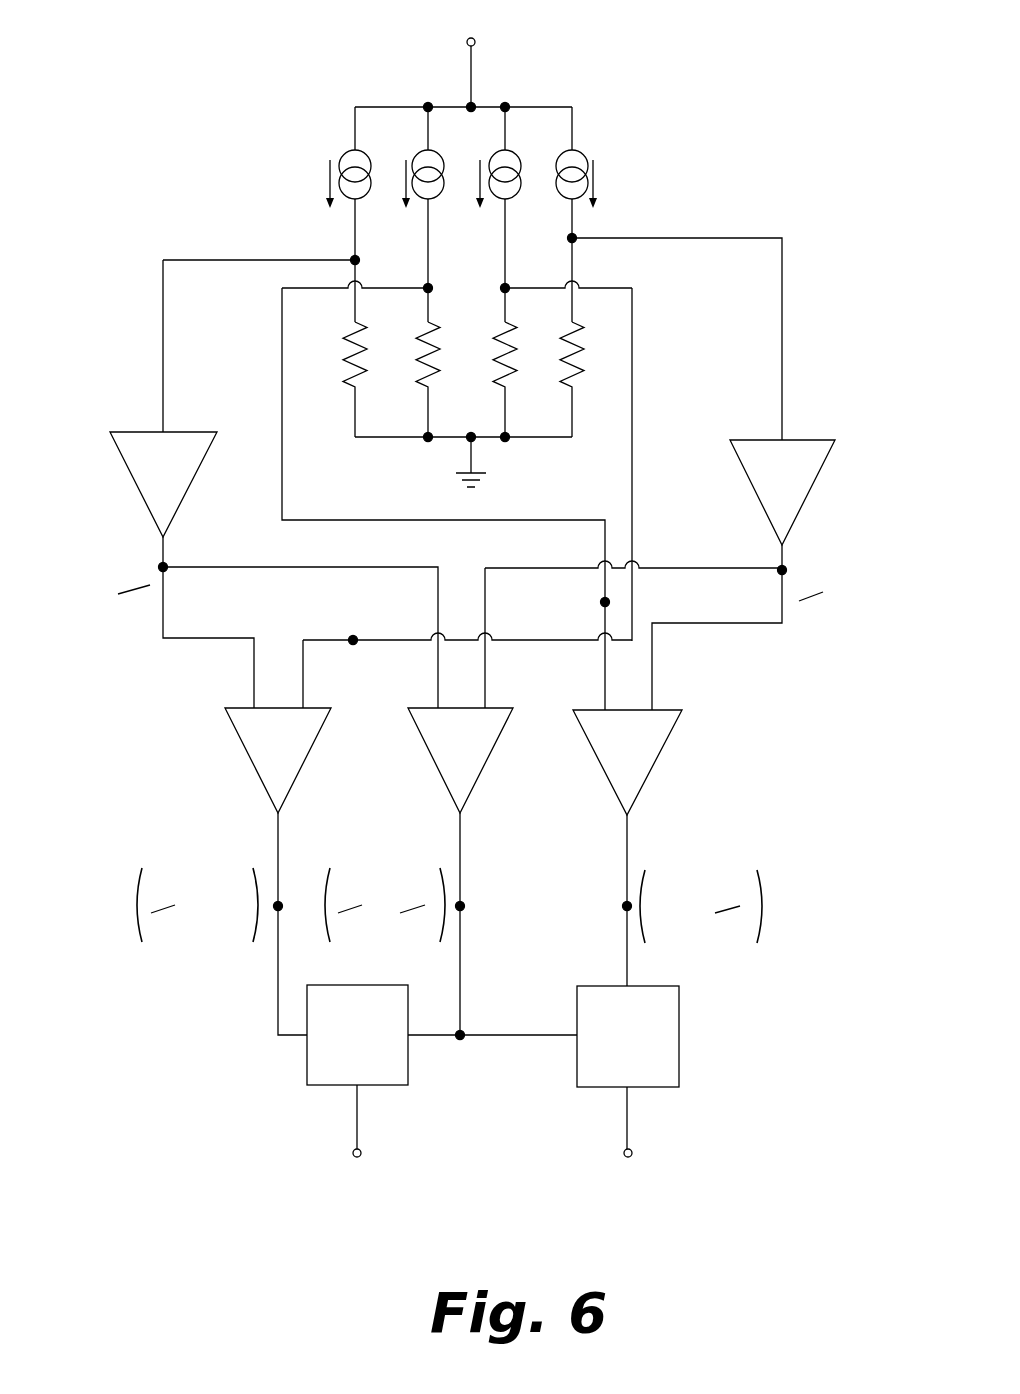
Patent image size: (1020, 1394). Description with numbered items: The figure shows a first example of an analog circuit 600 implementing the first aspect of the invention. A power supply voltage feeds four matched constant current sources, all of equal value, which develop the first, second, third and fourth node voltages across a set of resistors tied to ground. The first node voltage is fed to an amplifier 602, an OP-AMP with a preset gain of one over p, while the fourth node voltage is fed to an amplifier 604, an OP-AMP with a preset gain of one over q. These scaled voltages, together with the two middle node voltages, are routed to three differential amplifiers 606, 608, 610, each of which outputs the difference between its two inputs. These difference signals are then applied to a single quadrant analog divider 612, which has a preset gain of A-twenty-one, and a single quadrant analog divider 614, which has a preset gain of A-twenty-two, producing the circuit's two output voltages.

The analog circuit 600 is at (268, 130).
The amplifier 602 is at (147, 432).
The amplifier 604 is at (813, 440).
The differential amplifier 606 is at (248, 752).
The differential amplifier 608 is at (443, 780).
The differential amplifier 610 is at (655, 763).
The single quadrant analog divider 612 is at (680, 1040).
The single quadrant analog divider 614 is at (307, 1065).